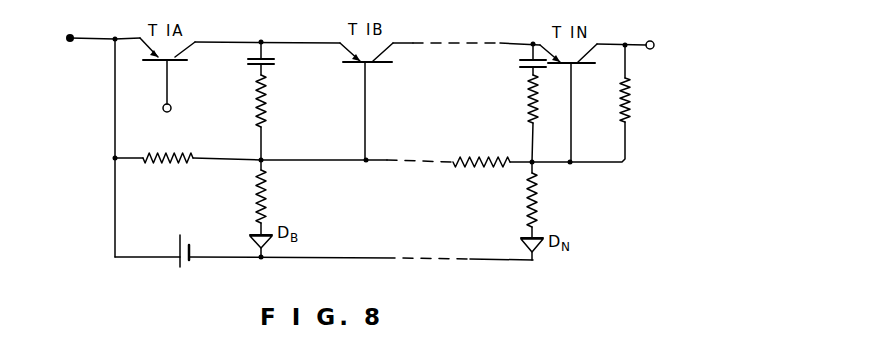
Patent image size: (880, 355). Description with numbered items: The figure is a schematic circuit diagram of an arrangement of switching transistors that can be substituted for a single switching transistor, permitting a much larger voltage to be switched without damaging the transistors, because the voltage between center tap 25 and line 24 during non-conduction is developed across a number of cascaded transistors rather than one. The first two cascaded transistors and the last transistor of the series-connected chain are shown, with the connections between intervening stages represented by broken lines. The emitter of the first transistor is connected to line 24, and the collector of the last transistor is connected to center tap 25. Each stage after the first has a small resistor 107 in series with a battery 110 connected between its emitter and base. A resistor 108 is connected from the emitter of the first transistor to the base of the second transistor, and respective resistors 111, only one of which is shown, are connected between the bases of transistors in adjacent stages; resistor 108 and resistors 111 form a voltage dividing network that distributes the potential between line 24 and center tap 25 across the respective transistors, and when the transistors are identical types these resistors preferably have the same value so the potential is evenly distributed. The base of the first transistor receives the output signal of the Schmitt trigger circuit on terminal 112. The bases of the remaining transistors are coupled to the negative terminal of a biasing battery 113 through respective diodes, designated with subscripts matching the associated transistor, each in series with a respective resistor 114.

The line 24 is at (72, 42).
The center tap 25 is at (610, 44).
The terminal 112 is at (173, 110).
The battery 110 is at (275, 61).
The resistor 107 is at (267, 100).
The resistor 108 is at (165, 165).
The resistor 111 is at (488, 167).
The resistor 114 is at (267, 198).
The battery 113 is at (182, 262).